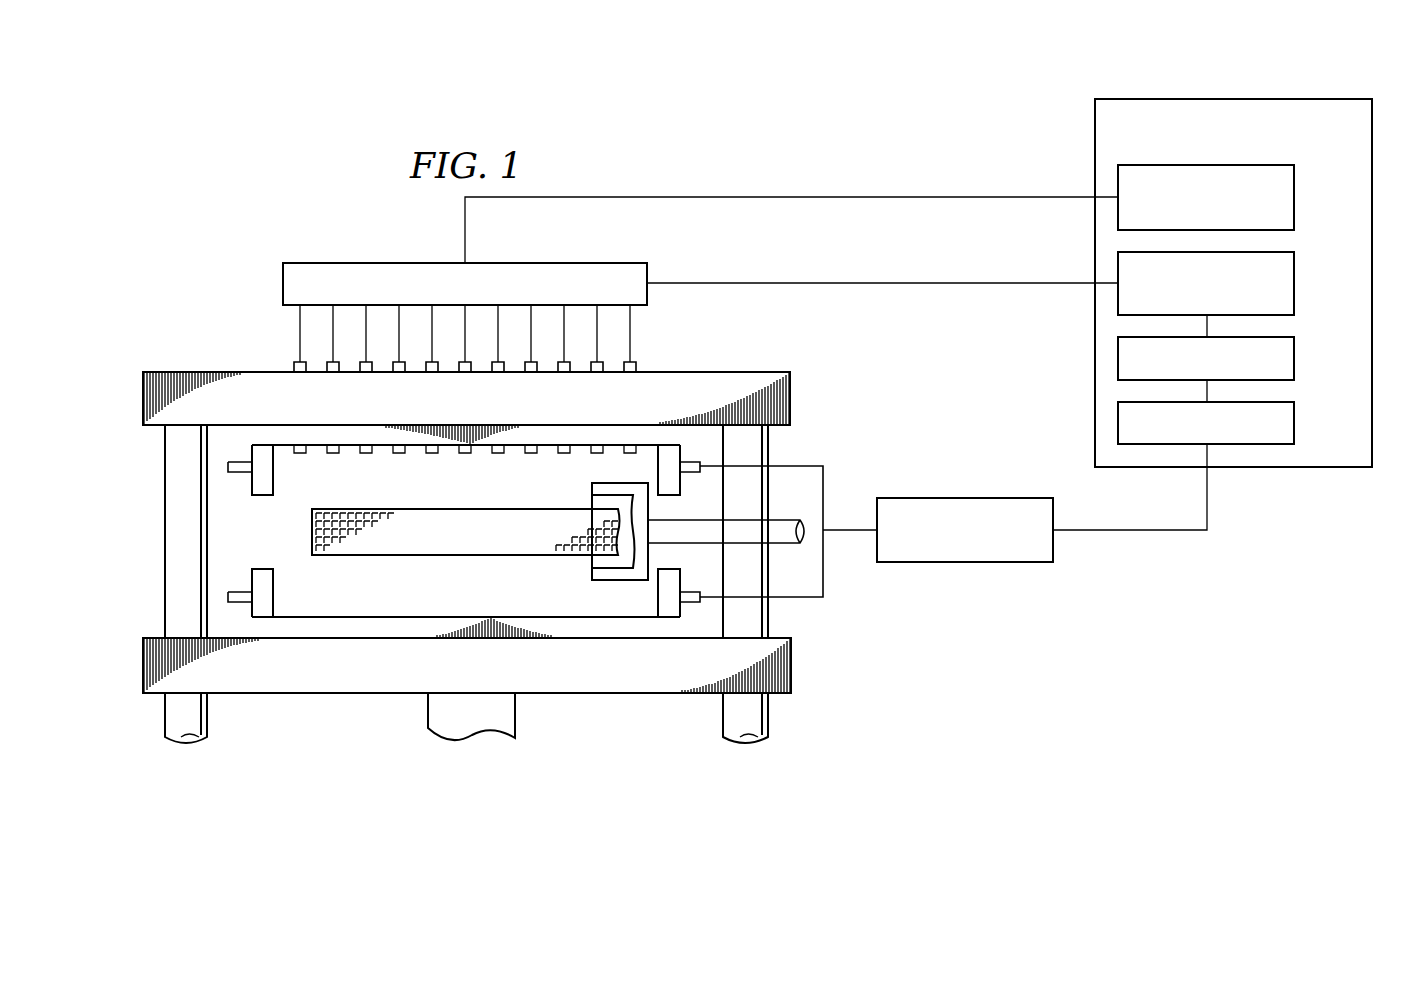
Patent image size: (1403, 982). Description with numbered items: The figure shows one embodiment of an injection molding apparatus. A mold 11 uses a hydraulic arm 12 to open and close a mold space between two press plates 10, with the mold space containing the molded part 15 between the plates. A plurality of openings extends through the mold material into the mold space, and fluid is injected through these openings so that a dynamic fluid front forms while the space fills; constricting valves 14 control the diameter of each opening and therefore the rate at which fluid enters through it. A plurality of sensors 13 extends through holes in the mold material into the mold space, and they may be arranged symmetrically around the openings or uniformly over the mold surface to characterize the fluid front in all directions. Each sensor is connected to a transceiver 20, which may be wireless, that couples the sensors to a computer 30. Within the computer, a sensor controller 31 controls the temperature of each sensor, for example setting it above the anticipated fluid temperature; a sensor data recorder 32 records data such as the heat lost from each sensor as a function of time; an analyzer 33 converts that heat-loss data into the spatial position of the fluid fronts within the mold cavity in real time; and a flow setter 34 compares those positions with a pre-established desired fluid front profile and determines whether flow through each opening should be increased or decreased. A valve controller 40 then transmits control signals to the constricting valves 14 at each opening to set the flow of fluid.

The press plates 10 is at (790, 378).
The mold 11 is at (273, 466).
The hydraulic arm 12 is at (428, 715).
The sensors 13 is at (276, 313).
The constricting valves 14 is at (240, 474).
The specimen 15 is at (482, 544).
The transceiver 20 is at (283, 287).
The computer 30 is at (1233, 249).
The sensor controller 31 is at (1294, 196).
The sensor data recorder 32 is at (1294, 283).
The analyzer 33 is at (1294, 358).
The flow setter 34 is at (1294, 422).
The valve controller 40 is at (1012, 563).